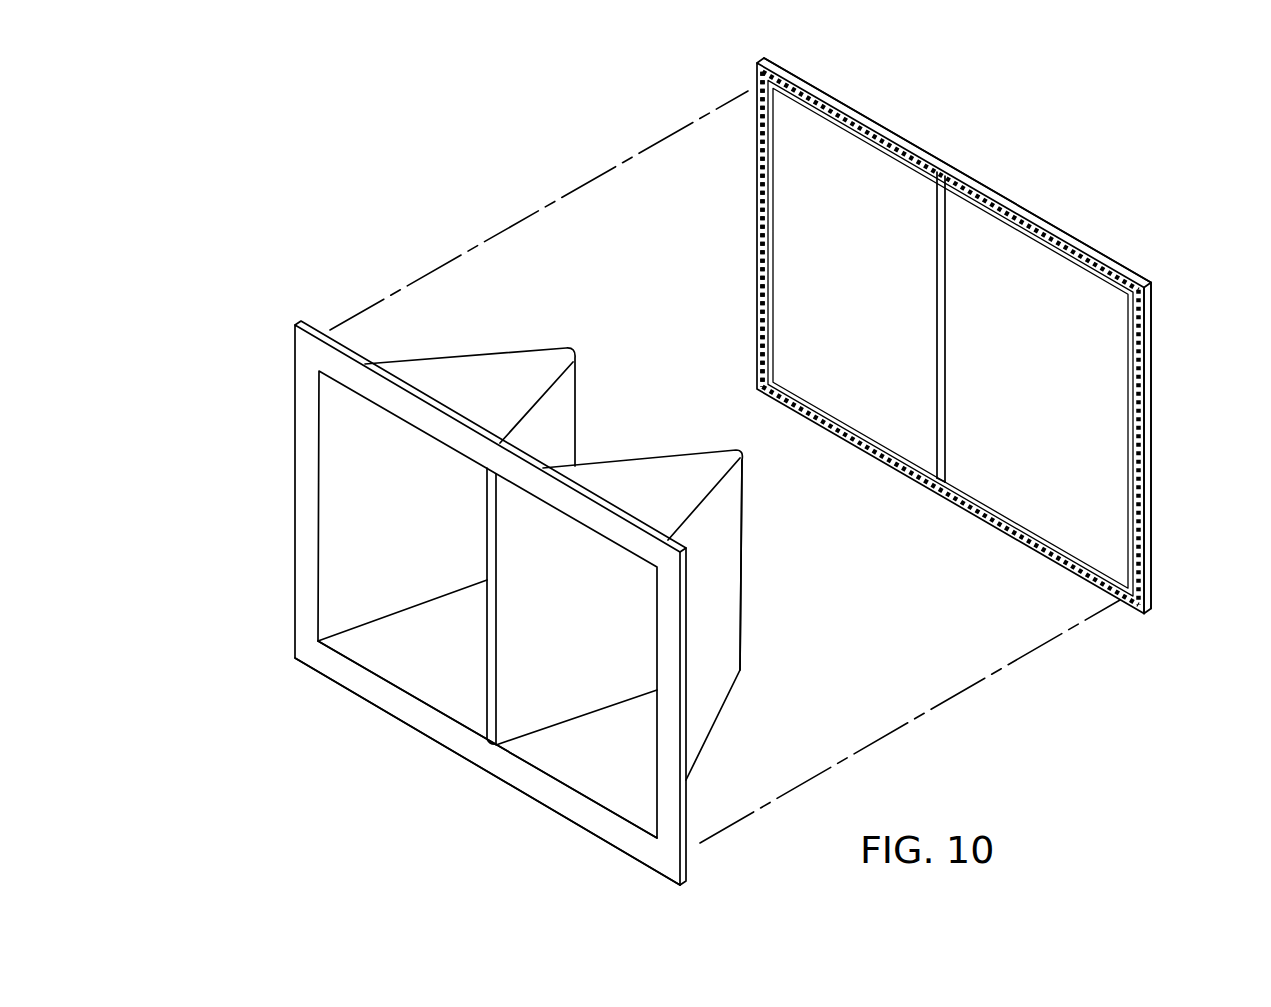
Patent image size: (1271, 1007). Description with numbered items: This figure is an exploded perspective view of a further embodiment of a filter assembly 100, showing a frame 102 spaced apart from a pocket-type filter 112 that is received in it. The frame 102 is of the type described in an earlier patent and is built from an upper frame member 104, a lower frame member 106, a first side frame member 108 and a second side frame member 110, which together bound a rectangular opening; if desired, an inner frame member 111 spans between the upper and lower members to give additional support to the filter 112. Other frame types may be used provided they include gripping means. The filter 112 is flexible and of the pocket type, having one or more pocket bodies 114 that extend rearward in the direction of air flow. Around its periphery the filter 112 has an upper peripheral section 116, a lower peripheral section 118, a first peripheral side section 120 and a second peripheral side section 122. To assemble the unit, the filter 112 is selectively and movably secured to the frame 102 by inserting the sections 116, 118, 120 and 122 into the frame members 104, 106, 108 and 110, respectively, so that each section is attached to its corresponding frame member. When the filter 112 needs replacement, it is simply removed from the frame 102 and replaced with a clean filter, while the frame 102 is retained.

The filter assembly 100 is at (543, 121).
The frame 102 is at (1009, 336).
The upper frame member 104 is at (1020, 203).
The lower frame member 106 is at (948, 485).
The first side frame member 108 is at (772, 240).
The second side frame member 110 is at (1145, 480).
The inner frame member 111 is at (945, 348).
The filter 112 is at (568, 519).
The pocket body 114 is at (568, 528).
The upper peripheral section 116 is at (512, 470).
The lower peripheral section 118 is at (503, 767).
The first peripheral side section 120 is at (437, 603).
The second peripheral side section 122 is at (672, 633).